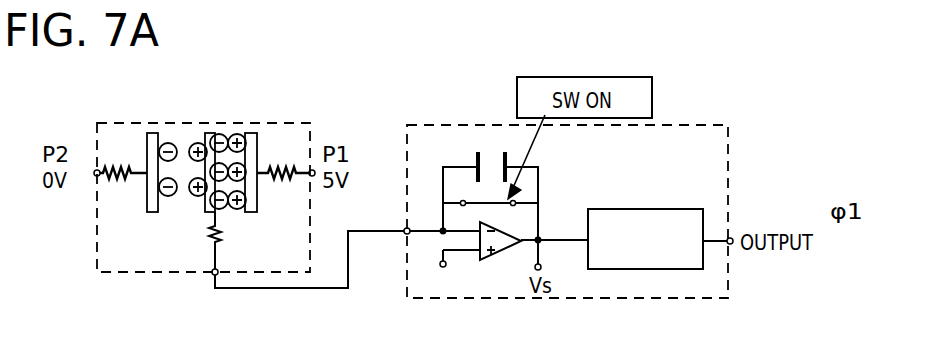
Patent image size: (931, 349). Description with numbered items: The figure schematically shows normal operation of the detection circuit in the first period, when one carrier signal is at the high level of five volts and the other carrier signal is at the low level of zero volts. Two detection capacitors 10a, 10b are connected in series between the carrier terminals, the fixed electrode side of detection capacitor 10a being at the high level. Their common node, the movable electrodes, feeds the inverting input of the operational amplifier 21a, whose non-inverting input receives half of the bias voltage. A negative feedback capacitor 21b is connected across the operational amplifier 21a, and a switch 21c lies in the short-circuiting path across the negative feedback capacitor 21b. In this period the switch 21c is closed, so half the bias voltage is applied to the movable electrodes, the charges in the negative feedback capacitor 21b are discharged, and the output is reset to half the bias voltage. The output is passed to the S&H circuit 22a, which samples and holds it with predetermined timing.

The detection capacitor 10a is at (238, 91).
The detection capacitor 10b is at (179, 91).
The operational amplifier 21a is at (497, 252).
The negative feedback capacitor 21b is at (474, 152).
The switch 21c is at (497, 203).
The S&H circuit 22a is at (655, 270).